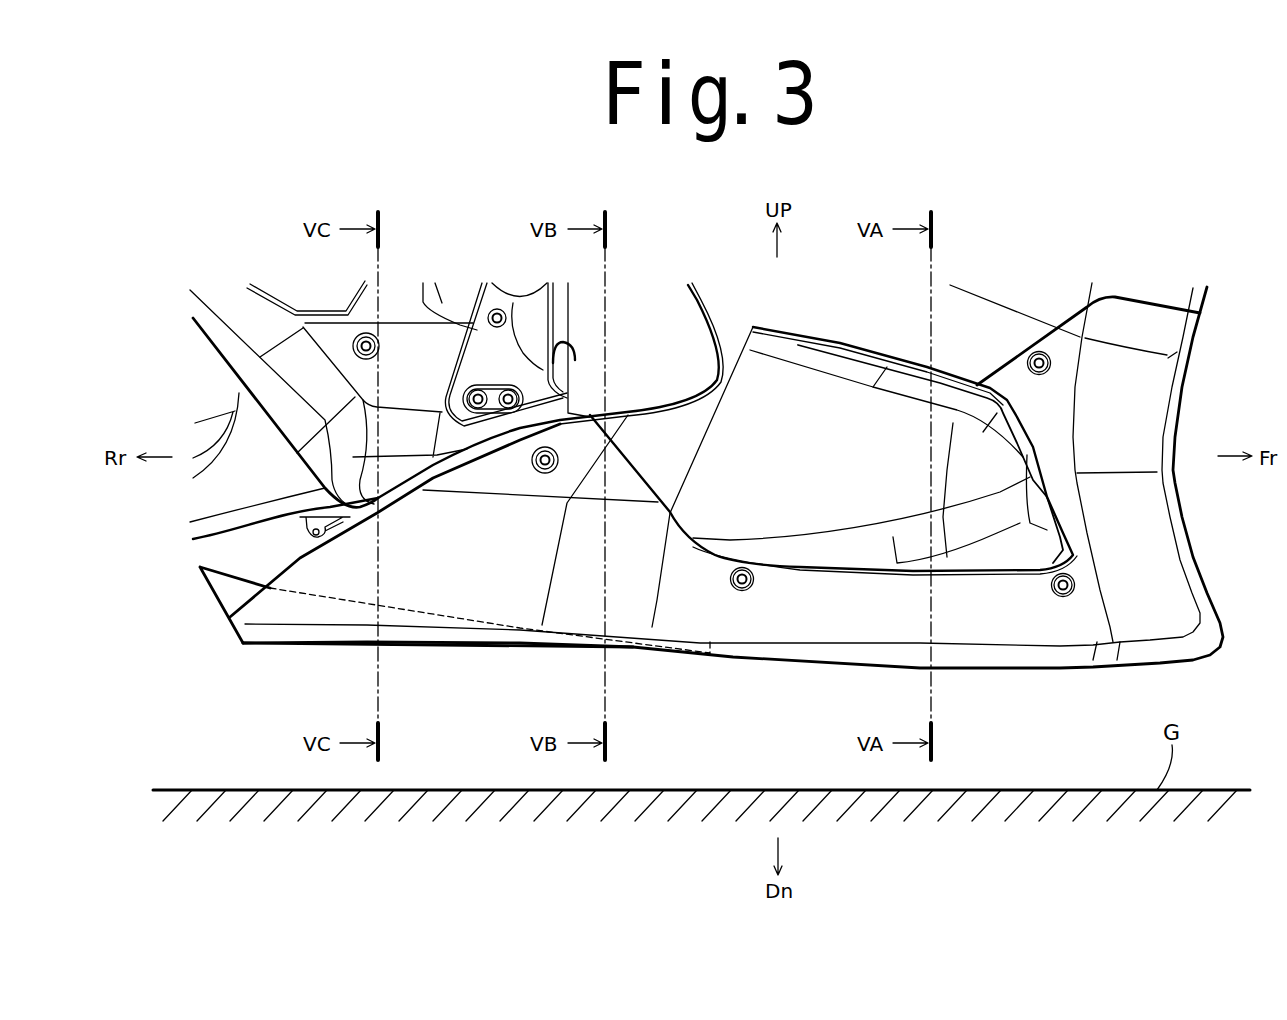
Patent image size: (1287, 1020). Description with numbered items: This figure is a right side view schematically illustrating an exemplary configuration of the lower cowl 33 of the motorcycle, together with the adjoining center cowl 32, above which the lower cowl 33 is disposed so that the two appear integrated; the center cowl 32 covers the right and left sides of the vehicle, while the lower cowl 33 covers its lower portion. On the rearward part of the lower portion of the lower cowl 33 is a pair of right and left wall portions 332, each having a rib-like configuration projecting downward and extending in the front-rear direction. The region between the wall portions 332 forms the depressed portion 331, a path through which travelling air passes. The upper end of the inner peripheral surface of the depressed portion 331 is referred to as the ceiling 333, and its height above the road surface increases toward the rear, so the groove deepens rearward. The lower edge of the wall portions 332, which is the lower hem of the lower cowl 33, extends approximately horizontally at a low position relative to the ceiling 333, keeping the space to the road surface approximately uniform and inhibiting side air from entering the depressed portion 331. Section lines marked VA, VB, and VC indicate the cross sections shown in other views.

The center cowl 32 is at (1160, 292).
The lower cowl 33 is at (1160, 593).
The depressed portion 331 is at (256, 610).
The wall portions 332 is at (262, 647).
The ceiling 333 is at (233, 575).